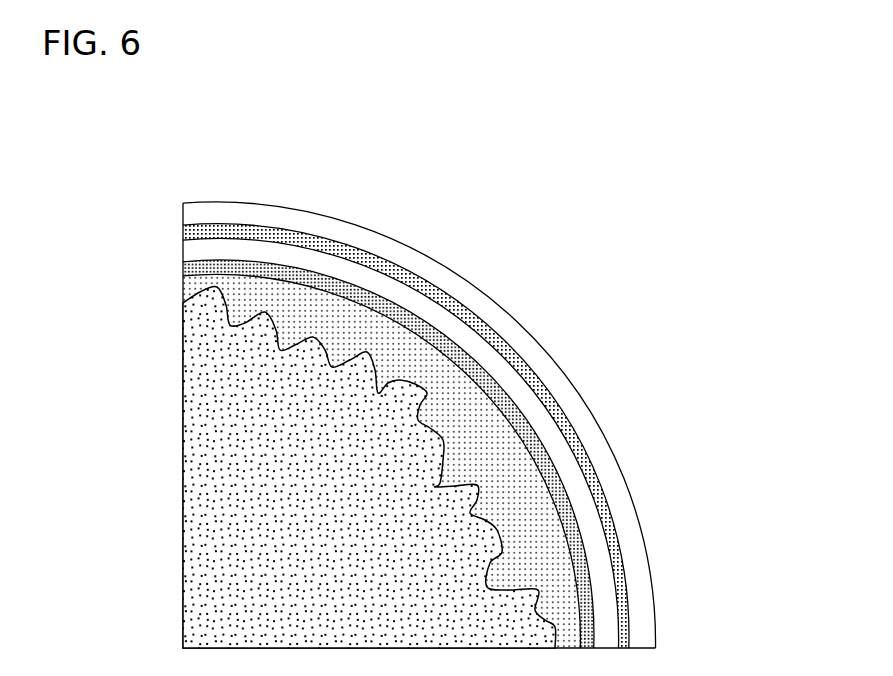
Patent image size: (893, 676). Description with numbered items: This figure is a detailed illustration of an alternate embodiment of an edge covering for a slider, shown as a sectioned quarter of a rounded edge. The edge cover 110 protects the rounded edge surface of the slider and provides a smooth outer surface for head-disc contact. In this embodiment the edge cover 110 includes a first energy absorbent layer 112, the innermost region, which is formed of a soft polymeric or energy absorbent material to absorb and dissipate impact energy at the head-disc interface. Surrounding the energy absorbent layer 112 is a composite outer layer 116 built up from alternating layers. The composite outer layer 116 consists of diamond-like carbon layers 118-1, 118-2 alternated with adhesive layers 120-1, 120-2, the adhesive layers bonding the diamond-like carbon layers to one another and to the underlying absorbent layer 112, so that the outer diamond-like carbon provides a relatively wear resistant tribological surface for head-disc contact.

The edge cover 110 is at (630, 447).
The first energy absorbent layer 112 is at (410, 372).
The composite outer layer 116 is at (417, 249).
The diamond-like carbon layer 118-1 is at (493, 360).
The diamond-like carbon layer 118-2 is at (556, 364).
The adhesive layer 120-1 is at (244, 273).
The adhesive layer 120-2 is at (285, 232).